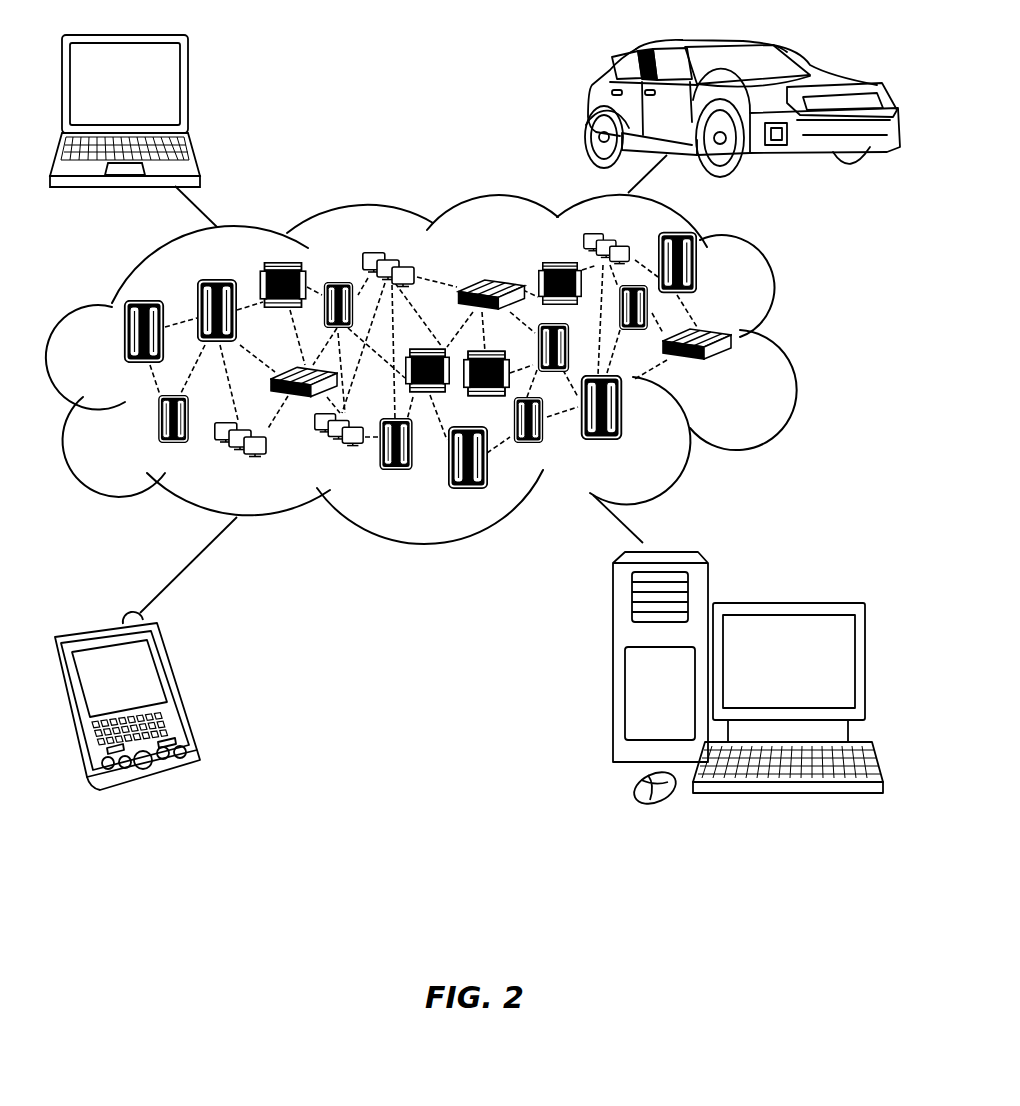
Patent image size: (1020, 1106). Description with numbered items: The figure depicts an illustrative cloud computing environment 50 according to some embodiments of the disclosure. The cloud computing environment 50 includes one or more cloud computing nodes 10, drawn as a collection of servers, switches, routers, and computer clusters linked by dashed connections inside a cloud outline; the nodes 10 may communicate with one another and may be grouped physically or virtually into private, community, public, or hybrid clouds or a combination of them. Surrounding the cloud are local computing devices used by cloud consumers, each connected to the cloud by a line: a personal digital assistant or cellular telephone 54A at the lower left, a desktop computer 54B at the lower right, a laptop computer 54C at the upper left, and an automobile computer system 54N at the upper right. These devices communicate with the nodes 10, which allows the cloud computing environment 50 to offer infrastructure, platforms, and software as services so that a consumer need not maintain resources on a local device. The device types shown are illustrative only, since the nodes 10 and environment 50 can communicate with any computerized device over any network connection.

The cloud computing node 10 is at (746, 371).
The cloud computing environment 50 is at (789, 337).
The personal digital assistant or cellular telephone 54A is at (180, 690).
The desktop computer 54B is at (787, 603).
The laptop computer 54C is at (190, 93).
The automobile computer system 54N is at (586, 110).